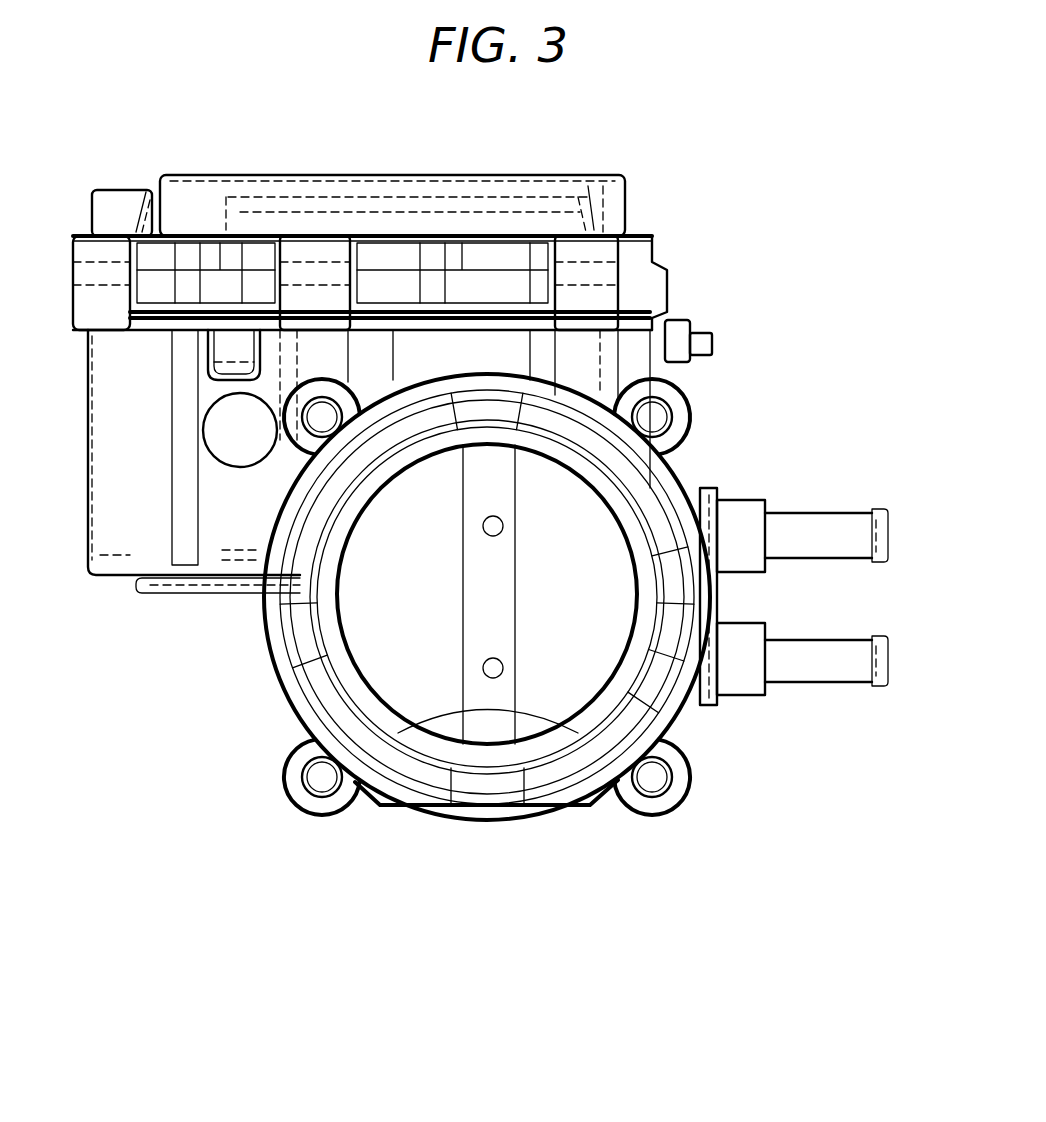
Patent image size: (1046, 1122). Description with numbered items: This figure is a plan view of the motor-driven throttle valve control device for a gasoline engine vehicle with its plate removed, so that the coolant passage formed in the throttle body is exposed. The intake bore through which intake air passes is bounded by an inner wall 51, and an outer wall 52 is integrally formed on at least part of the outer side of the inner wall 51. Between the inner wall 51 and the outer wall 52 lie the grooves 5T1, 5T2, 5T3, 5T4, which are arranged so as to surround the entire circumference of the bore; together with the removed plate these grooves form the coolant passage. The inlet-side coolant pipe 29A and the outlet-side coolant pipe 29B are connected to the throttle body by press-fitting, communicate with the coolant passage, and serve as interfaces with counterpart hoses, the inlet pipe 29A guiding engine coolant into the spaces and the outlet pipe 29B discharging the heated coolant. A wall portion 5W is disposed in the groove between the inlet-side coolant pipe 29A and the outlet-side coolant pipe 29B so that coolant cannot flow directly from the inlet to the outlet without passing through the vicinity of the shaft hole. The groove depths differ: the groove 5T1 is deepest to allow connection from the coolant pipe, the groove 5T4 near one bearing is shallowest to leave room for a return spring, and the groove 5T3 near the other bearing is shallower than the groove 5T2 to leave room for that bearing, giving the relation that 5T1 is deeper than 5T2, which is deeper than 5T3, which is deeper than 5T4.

The inner wall 51 is at (296, 489).
The outer wall 52 is at (322, 535).
The groove 5T1 is at (692, 562).
The groove 5T2 is at (635, 494).
The groove 5T3 is at (482, 791).
The groove 5T4 is at (493, 392).
The wall portion 5W is at (606, 618).
The inlet-side coolant pipe 29A is at (810, 516).
The outlet-side coolant pipe 29B is at (862, 642).